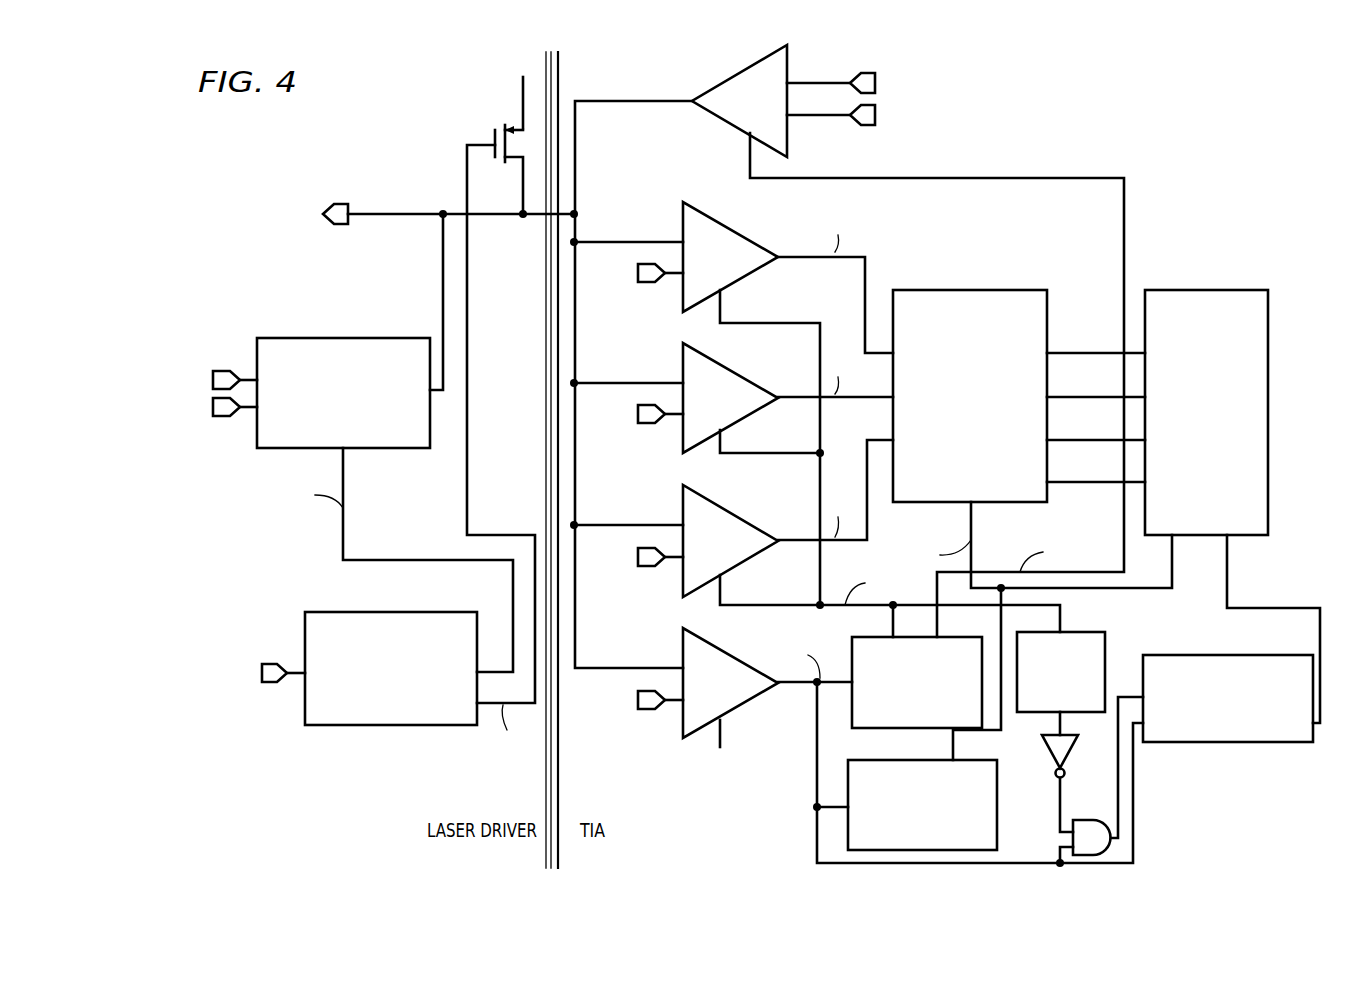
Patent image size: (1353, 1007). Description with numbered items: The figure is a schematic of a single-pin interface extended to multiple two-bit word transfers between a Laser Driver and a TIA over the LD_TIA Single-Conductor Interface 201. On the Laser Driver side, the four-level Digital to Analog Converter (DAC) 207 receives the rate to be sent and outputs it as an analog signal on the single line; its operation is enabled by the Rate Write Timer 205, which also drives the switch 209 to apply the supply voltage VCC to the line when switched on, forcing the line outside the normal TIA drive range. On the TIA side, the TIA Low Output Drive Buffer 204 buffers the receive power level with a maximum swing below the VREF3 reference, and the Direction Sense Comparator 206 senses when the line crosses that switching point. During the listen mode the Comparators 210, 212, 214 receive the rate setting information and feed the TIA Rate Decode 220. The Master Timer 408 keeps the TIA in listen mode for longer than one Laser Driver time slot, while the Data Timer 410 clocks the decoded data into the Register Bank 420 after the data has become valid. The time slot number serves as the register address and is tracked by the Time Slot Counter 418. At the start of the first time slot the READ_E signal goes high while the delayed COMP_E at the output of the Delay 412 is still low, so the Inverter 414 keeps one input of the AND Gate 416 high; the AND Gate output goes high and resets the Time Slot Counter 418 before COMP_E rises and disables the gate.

The LD_TIA Single-Conductor Interface 201 is at (537, 218).
The TIA Low Output Drive Buffer 204 is at (720, 83).
The Rate Write Timer 205 is at (390, 612).
The Direction Sense Comparator 206 is at (683, 648).
The 4 level Digital to Analog Converter (DAC) 207 is at (340, 338).
The switch 209 is at (495, 128).
The Comparator 210 is at (748, 240).
The Comparator 212 is at (748, 380).
The Comparator 214 is at (748, 523).
The TIA Rate Decode 220 is at (980, 290).
The Master Timer 408 is at (850, 703).
The Data Timer 410 is at (848, 785).
The Delay 412 is at (1105, 645).
The Inverter 414 is at (1050, 755).
The AND Gate 416 is at (1080, 820).
The Time Slot Counter 418 is at (1205, 655).
The Register Bank 420 is at (1195, 290).